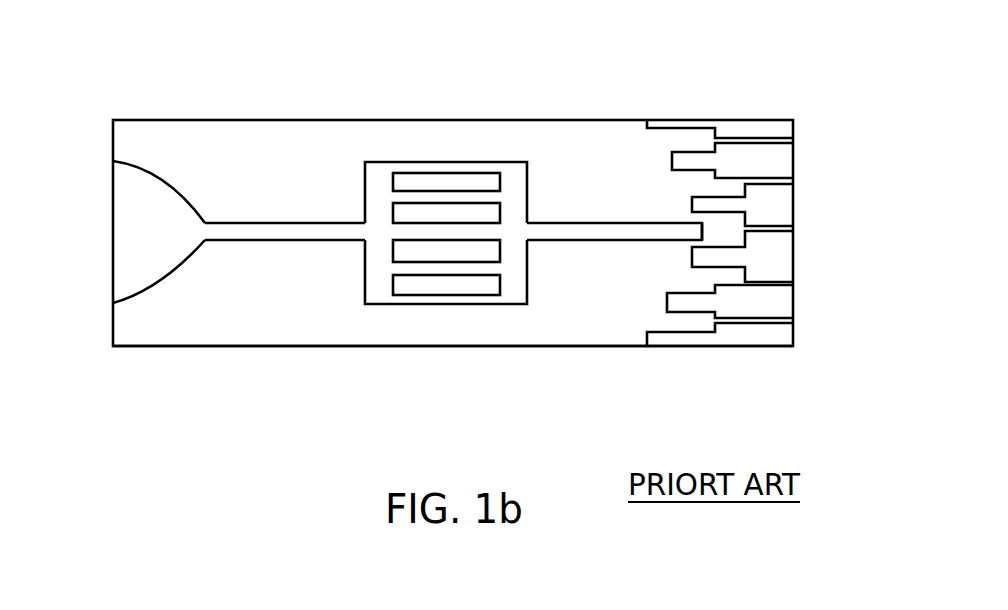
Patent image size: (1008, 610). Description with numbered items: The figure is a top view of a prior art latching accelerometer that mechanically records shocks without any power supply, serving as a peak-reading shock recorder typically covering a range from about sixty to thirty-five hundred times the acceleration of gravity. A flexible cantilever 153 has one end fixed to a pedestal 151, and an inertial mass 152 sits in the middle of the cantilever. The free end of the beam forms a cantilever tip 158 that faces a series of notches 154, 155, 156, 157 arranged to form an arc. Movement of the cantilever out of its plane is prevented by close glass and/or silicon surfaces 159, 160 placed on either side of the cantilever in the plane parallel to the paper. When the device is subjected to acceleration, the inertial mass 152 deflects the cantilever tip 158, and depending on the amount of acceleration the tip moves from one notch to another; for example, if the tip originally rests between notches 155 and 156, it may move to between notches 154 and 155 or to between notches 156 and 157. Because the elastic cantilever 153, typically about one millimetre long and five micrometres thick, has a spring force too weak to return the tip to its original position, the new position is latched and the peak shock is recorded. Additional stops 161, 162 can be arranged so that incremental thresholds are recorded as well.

The pedestal 151 is at (145, 208).
The inertial mass 152 is at (383, 195).
The flexible cantilever 153 is at (570, 223).
The notch 154 is at (780, 160).
The notch 155 is at (780, 207).
The notch 156 is at (780, 261).
The notch 157 is at (780, 300).
The cantilever tip 158 is at (672, 235).
The glass and/or silicon surface 159 is at (260, 120).
The glass and/or silicon surface 160 is at (250, 347).
The additional stop 161 is at (758, 122).
The additional stop 162 is at (757, 333).